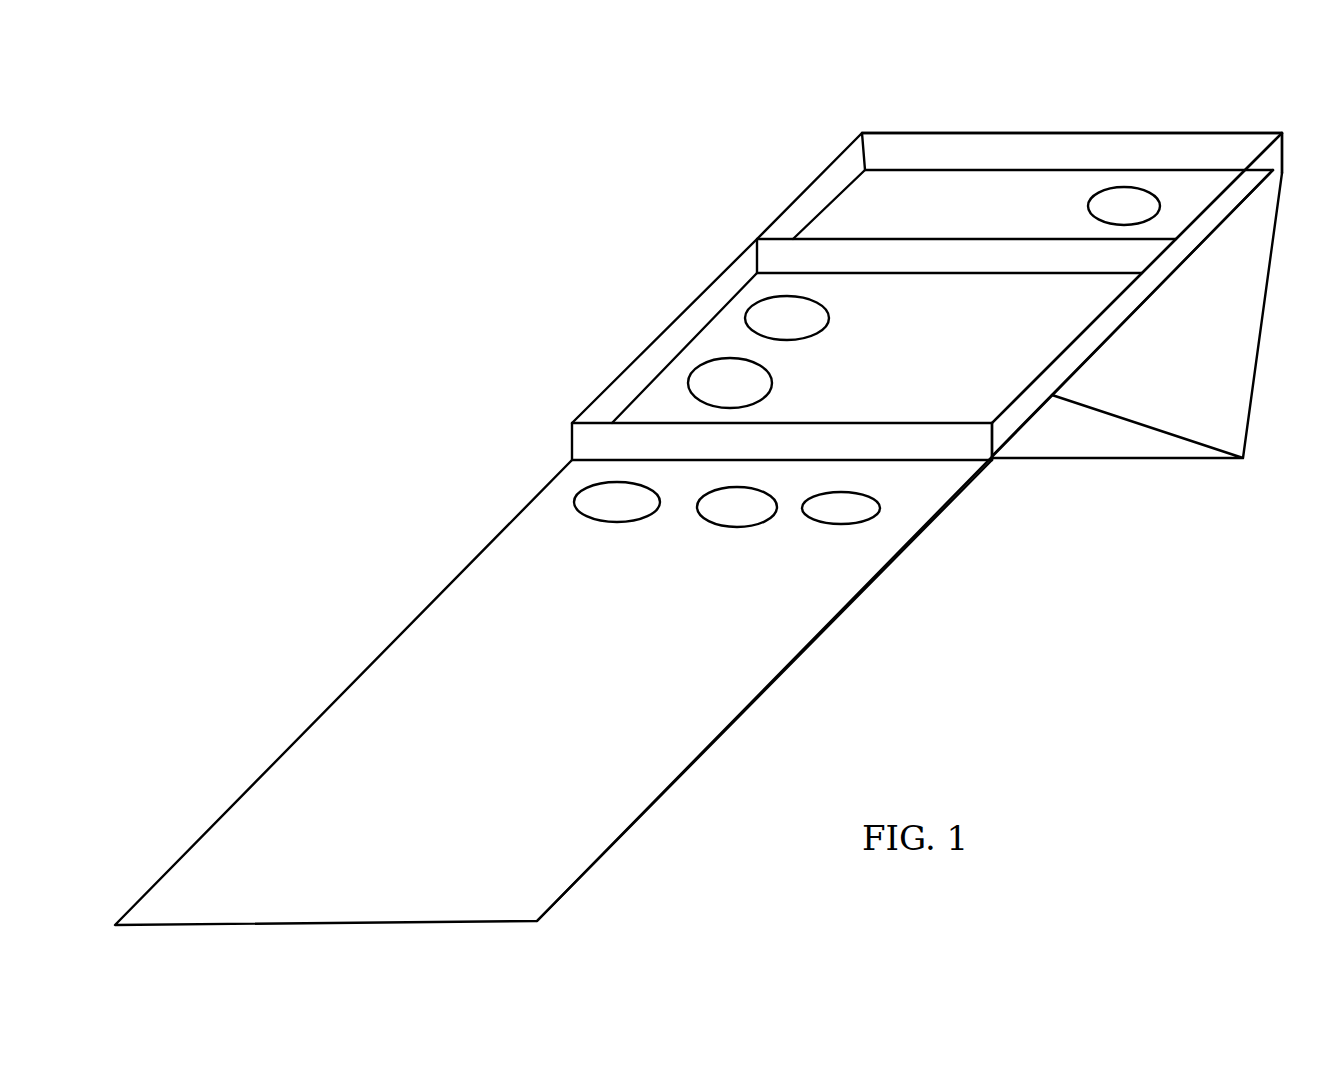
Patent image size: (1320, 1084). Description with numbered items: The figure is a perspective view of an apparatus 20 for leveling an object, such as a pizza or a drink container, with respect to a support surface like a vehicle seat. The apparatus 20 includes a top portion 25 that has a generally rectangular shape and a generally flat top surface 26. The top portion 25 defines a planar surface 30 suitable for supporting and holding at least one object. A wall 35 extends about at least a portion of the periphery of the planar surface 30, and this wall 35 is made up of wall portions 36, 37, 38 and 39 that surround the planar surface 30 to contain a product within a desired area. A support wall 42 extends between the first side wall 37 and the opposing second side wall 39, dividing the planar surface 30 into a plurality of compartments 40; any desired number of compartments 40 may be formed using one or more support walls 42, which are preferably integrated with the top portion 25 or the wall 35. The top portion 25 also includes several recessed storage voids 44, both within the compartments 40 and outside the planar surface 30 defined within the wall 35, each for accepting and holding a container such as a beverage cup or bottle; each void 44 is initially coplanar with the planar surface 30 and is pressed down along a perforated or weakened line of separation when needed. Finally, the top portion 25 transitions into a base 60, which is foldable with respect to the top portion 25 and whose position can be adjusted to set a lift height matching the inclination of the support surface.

The apparatus 20 is at (559, 378).
The top portion 25 is at (858, 590).
The top surface 26 is at (708, 730).
The planar surface 30 is at (1056, 334).
The wall 35 is at (967, 150).
The wall portion 36 is at (1035, 143).
The first side wall 37 is at (1197, 247).
The wall portion 38 is at (905, 461).
The second side wall 39 is at (680, 333).
The compartment 40 is at (1195, 180).
The support wall 42 is at (913, 253).
The recessed storage void 44 is at (1108, 207).
The base 60 is at (1150, 443).